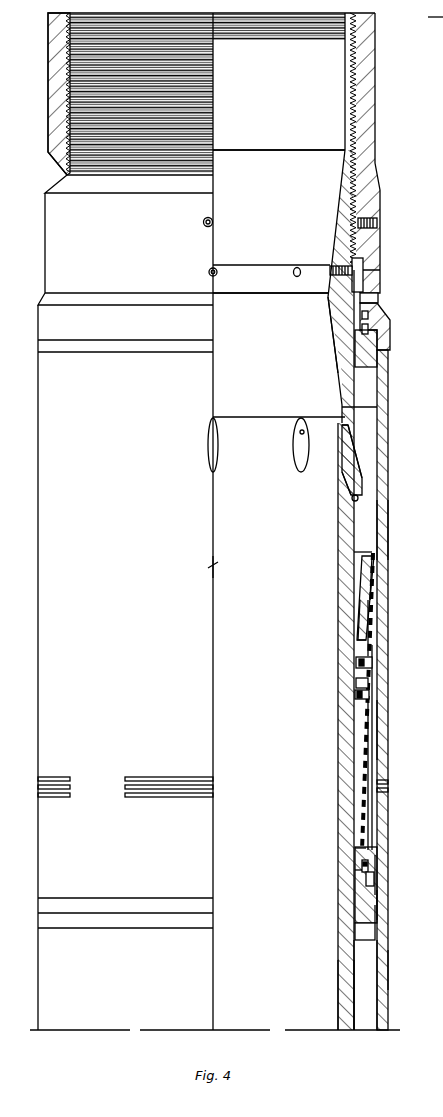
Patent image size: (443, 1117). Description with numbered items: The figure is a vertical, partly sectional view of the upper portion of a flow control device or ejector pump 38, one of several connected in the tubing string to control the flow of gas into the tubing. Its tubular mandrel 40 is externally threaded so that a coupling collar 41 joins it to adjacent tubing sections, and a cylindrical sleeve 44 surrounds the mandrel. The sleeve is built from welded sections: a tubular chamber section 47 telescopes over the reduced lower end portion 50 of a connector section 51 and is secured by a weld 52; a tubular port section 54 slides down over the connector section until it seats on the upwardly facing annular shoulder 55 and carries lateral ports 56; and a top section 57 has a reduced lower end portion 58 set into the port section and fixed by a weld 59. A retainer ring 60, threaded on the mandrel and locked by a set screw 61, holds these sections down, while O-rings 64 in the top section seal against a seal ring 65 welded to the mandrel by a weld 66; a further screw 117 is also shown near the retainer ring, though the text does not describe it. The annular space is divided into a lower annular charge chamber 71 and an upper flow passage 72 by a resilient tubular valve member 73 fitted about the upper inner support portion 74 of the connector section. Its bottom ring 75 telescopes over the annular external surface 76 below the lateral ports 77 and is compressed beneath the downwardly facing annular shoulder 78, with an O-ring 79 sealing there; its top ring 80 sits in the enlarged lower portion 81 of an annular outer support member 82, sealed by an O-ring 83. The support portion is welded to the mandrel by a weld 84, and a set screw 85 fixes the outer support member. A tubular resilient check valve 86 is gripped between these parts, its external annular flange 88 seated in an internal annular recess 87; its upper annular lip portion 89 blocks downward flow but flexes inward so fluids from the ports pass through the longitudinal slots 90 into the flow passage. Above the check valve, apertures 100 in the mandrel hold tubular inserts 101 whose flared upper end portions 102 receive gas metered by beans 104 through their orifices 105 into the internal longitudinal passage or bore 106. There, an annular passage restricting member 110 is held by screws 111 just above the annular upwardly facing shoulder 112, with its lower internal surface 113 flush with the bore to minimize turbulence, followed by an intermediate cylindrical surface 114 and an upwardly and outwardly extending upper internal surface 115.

The flow control device or ejector pump 38 is at (401, 389).
The tubular mandrel 40 is at (356, 994).
The coupling collar 41 is at (370, 105).
The cylindrical sleeve 44 is at (396, 522).
The tubular chamber section 47 is at (383, 967).
The reduced lower end portion 50 is at (368, 933).
The connector section 51 is at (391, 903).
The weld 52 is at (385, 922).
The tubular port section 54 is at (373, 663).
The upwardly facing annular shoulder 55 is at (377, 888).
The lateral ports 56 is at (175, 794).
The top section 57 is at (388, 318).
The reduced lower end portion 58 is at (373, 360).
The weld 59 is at (383, 348).
The retainer ring 60 is at (373, 247).
The set screw 61 is at (378, 222).
The O-rings 64 is at (362, 318).
The seal ring 65 is at (363, 302).
The weld 66 is at (337, 379).
The annular charge chamber 71 is at (367, 1020).
The flow passage 72 is at (367, 498).
The resilient tubular closure or valve member 73 is at (370, 757).
The upper inner support portion 74 is at (353, 722).
The bottom ring 75 is at (382, 843).
The annular external surface 76 is at (377, 877).
The lateral ports 77 is at (362, 848).
The downwardly facing annular shoulder 78 is at (380, 862).
The O-ring 79 is at (362, 873).
The top ring 80 is at (362, 678).
The enlarged lower portion 81 is at (370, 720).
The annular outer support member 82 is at (372, 647).
The O-ring 83 is at (360, 694).
The weld 84 is at (353, 552).
The set screw 85 is at (373, 666).
The tubular resilient check valve 86 is at (377, 598).
The internal annular recess 87 is at (360, 642).
The external annular flange 88 is at (375, 620).
The upper annular lip portion 89 is at (377, 562).
The longitudinal slots 90 is at (377, 582).
The apertures 100 is at (351, 498).
The tubular inserts 101 is at (345, 480).
The upper end portions of insert passages 102 is at (342, 460).
The beans 104 is at (352, 473).
The orifices 105 is at (349, 460).
The internal longitudinal passage or bore 106 is at (227, 985).
The annular passage restricting member 110 is at (294, 146).
The screws 111 is at (292, 266).
The annular upwardly facing shoulder 112 is at (347, 408).
The lower internal surface 113 is at (277, 397).
The intermediate cylindrical surface 114 is at (277, 280).
The upper internal surface 115 is at (257, 160).
The screw 117 is at (363, 269).